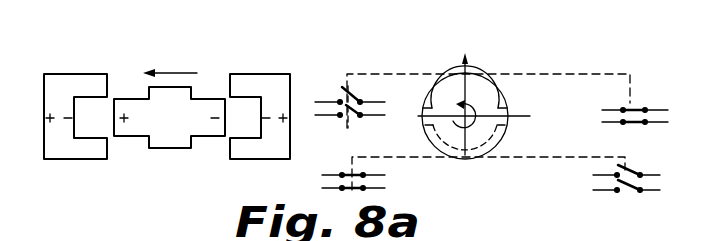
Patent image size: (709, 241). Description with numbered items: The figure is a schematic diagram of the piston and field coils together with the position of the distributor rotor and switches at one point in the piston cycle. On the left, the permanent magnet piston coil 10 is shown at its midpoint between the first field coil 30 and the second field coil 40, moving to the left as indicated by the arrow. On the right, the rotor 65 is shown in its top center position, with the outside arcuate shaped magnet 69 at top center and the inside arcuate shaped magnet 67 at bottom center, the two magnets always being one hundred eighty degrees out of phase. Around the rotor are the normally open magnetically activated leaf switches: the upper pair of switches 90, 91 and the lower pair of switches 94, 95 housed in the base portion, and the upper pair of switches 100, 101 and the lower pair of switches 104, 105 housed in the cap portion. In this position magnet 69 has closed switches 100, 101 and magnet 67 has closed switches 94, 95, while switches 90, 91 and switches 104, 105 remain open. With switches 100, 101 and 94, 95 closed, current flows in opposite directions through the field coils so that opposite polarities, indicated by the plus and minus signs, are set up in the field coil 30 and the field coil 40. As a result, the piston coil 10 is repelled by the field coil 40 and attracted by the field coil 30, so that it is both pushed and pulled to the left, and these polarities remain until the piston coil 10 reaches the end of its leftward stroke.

The permanent magnet piston coil 10 is at (177, 140).
The first field coil 30 is at (96, 153).
The second field coil 40 is at (270, 147).
The rotor 65 is at (505, 116).
The inside arcuate shaped magnet 67 is at (495, 142).
The outside arcuate shaped magnet 69 is at (492, 90).
The magnetically activated leaf switch 90 is at (355, 95).
The magnetically activated leaf switch 91 is at (350, 123).
The magnetically activated leaf switch 94 is at (363, 173).
The magnetically activated leaf switch 95 is at (352, 190).
The magnetically activated leaf switch 100 is at (637, 107).
The magnetically activated leaf switch 101 is at (640, 124).
The magnetically activated leaf switch 104 is at (632, 172).
The magnetically activated leaf switch 105 is at (630, 192).